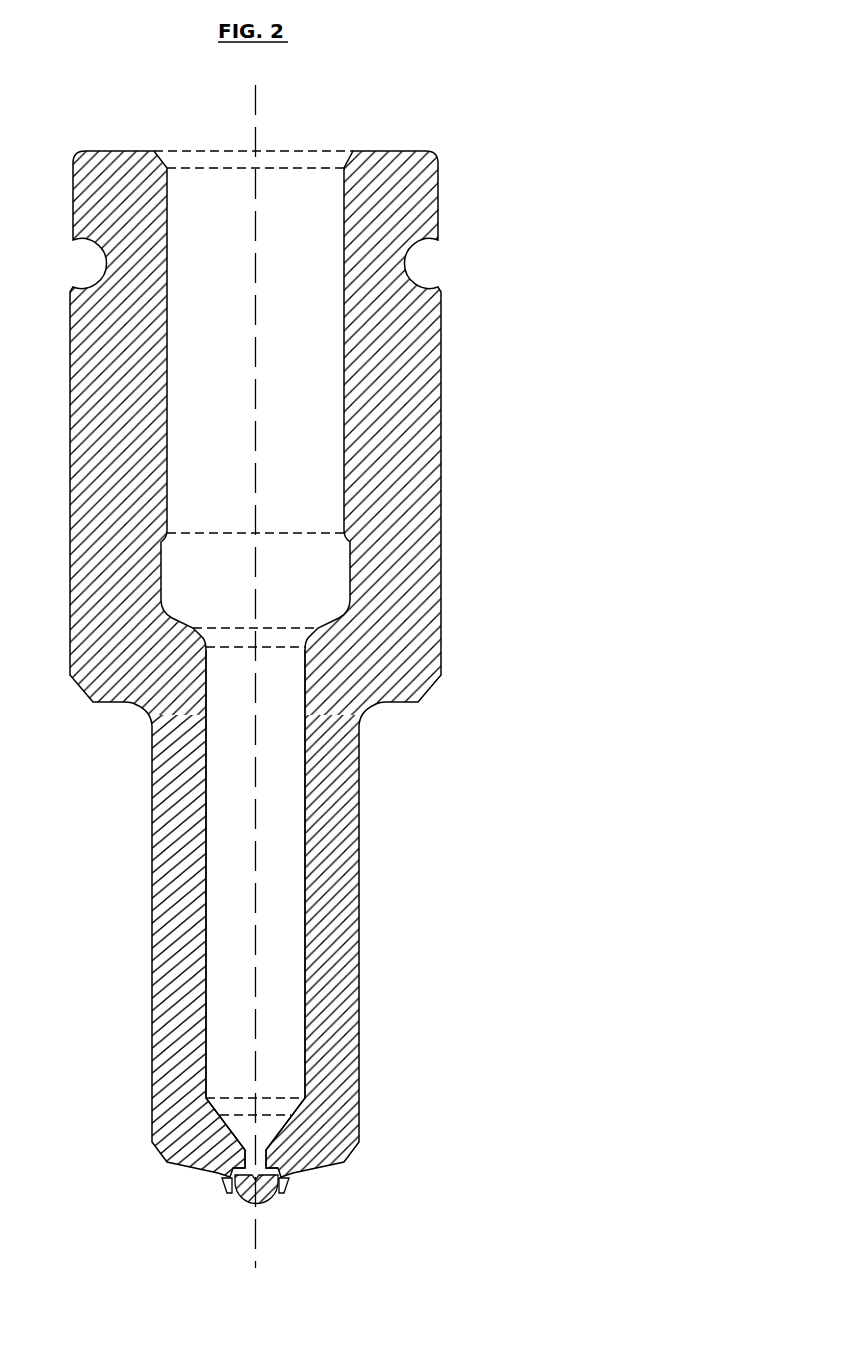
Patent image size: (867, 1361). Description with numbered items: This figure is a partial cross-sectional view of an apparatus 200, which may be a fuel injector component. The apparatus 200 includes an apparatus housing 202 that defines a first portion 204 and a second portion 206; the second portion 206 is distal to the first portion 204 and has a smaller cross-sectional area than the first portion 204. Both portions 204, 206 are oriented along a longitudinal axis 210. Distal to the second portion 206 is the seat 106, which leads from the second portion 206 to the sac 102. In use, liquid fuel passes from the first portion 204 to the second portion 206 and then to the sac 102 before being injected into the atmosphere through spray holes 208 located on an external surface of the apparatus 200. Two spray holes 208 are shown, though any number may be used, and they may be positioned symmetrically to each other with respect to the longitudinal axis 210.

The apparatus 200 is at (572, 169).
The apparatus housing 202 is at (362, 1049).
The first portion 204 is at (318, 422).
The second portion 206 is at (232, 908).
The seat 106 is at (230, 1133).
The sac 102 is at (265, 1163).
The spray holes 208 is at (211, 1181).
The longitudinal axis 210 is at (257, 1248).